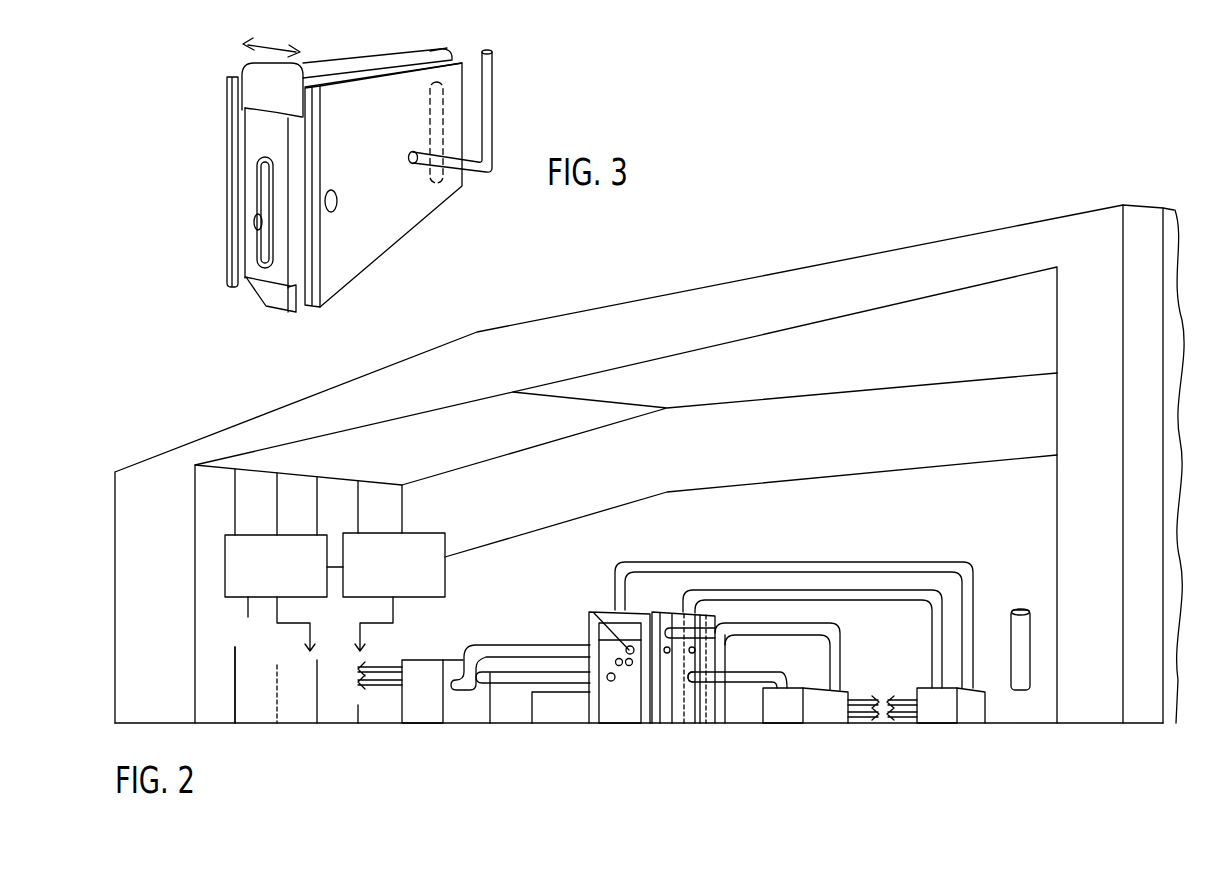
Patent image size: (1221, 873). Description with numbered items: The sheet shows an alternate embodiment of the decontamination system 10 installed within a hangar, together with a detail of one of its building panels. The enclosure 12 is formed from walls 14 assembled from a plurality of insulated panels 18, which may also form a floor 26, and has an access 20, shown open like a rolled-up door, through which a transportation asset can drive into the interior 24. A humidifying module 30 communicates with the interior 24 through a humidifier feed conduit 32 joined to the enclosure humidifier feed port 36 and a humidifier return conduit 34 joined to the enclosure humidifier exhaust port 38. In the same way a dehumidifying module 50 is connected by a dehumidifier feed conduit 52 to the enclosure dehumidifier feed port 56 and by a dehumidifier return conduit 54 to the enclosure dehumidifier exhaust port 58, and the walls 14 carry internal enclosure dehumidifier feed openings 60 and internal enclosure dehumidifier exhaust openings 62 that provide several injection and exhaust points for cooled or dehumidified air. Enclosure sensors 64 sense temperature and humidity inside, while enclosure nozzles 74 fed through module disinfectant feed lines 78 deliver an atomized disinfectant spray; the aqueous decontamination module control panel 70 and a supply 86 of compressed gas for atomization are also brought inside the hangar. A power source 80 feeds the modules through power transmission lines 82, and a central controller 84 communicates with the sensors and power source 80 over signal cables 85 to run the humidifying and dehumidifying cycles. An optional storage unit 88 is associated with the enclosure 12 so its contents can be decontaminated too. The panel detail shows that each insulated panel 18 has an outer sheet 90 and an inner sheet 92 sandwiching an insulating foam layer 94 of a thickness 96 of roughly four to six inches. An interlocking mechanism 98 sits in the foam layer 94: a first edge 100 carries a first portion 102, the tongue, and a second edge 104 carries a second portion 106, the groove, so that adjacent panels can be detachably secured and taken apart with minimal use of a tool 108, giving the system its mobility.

In FIG. 2, the decontamination system 10 is at (752, 659).
In FIG. 2, the enclosure 12 is at (694, 670).
In FIG. 2, the walls 14 is at (593, 660).
In FIG. 3, the insulated panel 18 is at (329, 177).
In FIG. 2, the insulated panel 18 is at (700, 712).
In FIG. 2, the access 20 is at (590, 692).
In FIG. 2, the interior 24 is at (607, 707).
In FIG. 2, the floor 26 is at (285, 723).
In FIG. 2, the humidifying module 30 is at (472, 708).
In FIG. 2, the humidifier feed conduit 32 is at (483, 645).
In FIG. 2, the humidifier return conduit 34 is at (523, 672).
In FIG. 2, the enclosure humidifier feed port 36 is at (627, 643).
In FIG. 2, the enclosure humidifier exhaust port 38 is at (607, 674).
In FIG. 2, the dehumidifying module 50 is at (790, 704).
In FIG. 2, the dehumidifier feed conduit 52 is at (841, 645).
In FIG. 2, the dehumidifier return conduit 54 is at (737, 677).
In FIG. 2, the enclosure dehumidifier feed port 56 is at (670, 608).
In FIG. 2, the enclosure dehumidifier exhaust port 58 is at (700, 676).
In FIG. 2, the internal enclosure dehumidifier feed openings 60 is at (665, 646).
In FIG. 2, the internal enclosure dehumidifier exhaust openings 62 is at (694, 646).
In FIG. 2, the enclosure sensors 64 is at (628, 667).
In FIG. 2, the aqueous decontamination module control panel 70 is at (970, 712).
In FIG. 2, the enclosure nozzles 74 is at (598, 627).
In FIG. 2, the module disinfectant feed lines 78 is at (794, 605).
In FIG. 2, the power source 80 is at (428, 533).
In FIG. 2, the power transmission lines 82 is at (381, 624).
In FIG. 2, the central controller 84 is at (248, 612).
In FIG. 2, the signal cables 85 is at (291, 624).
In FIG. 2, the supply of compressed gas 86 is at (1030, 650).
In FIG. 2, the storage unit 88 is at (558, 707).
In FIG. 3, the outer sheet 90 is at (227, 213).
In FIG. 3, the inner sheet 92 is at (333, 272).
In FIG. 3, the insulating foam layer 94 is at (266, 286).
In FIG. 3, the thickness 96 is at (268, 40).
In FIG. 3, the interlocking mechanism 98 is at (200, 175).
In FIG. 3, the first edge 100 is at (200, 175).
In FIG. 3, the first portion 102 is at (263, 140).
In FIG. 3, the second edge 104 is at (428, 50).
In FIG. 3, the second portion 106 is at (446, 112).
In FIG. 3, the tool 108 is at (494, 69).